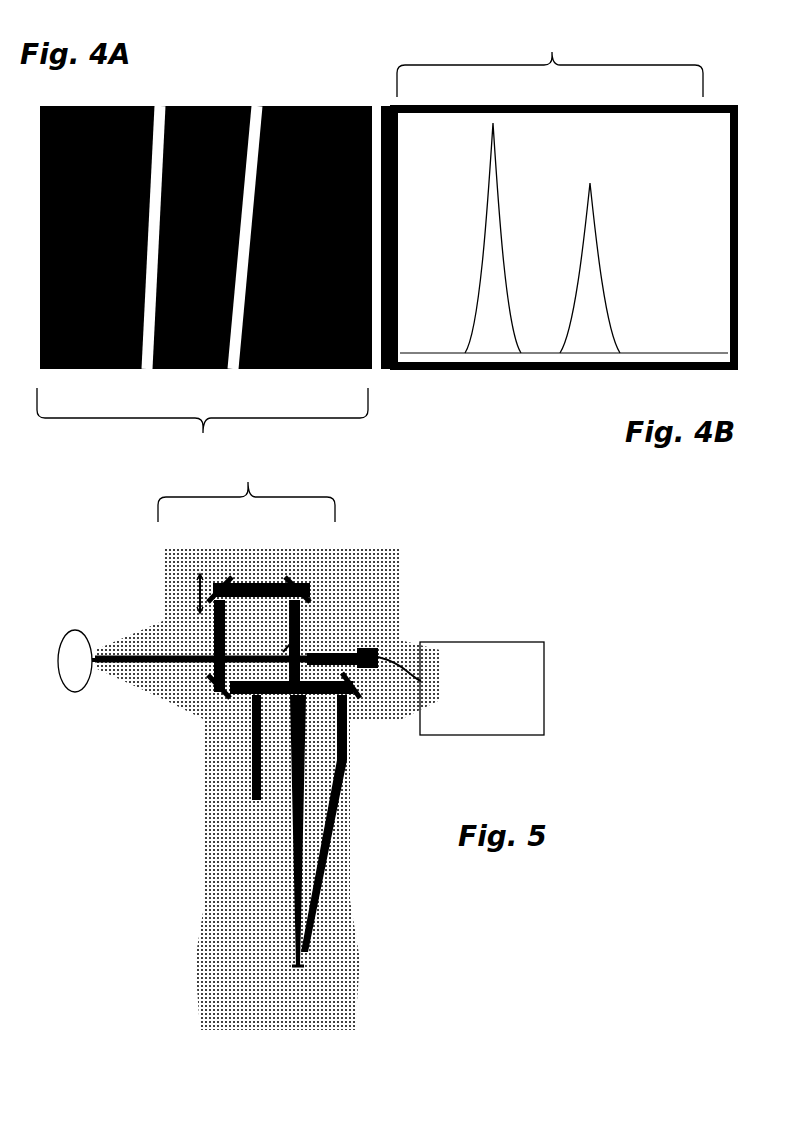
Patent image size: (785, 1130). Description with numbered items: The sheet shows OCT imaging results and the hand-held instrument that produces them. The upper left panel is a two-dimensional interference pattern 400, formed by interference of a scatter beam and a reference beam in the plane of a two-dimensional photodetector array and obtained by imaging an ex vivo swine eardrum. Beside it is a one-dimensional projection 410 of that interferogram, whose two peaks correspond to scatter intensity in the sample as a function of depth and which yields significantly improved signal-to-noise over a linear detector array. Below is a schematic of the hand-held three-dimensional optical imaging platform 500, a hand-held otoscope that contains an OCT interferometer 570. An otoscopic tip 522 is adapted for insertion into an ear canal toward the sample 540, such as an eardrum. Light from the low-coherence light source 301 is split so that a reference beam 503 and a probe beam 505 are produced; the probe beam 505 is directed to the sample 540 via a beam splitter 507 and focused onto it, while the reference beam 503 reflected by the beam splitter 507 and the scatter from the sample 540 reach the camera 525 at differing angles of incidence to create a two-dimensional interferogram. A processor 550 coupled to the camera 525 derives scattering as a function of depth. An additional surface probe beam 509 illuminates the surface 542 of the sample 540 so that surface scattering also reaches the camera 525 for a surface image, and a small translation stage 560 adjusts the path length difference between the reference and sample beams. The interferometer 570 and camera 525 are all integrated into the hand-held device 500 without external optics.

In FIG. 4A, the interference pattern 400 is at (190, 437).
In FIG. 4B, the one-dimensional projection 410 is at (562, 53).
In FIG. 5, the hand-held 3-D optical imaging platform 500 is at (478, 523).
In FIG. 5, the OCT interferometer 570 is at (258, 477).
In FIG. 5, the translation stage 560 is at (276, 571).
In FIG. 5, the beam splitter 507 is at (288, 649).
In FIG. 5, the otoscopic tip 522 is at (126, 668).
In FIG. 5, the sample 540 is at (74, 640).
In FIG. 5, the surface 542 is at (91, 660).
In FIG. 5, the camera 525 is at (368, 648).
In FIG. 5, the processor 550 is at (520, 650).
In FIG. 5, the surface probe beam 509 is at (265, 791).
In FIG. 5, the probe beam 505 is at (304, 753).
In FIG. 5, the reference beam 503 is at (323, 818).
In FIG. 5, the low-coherence light source 301 is at (297, 967).